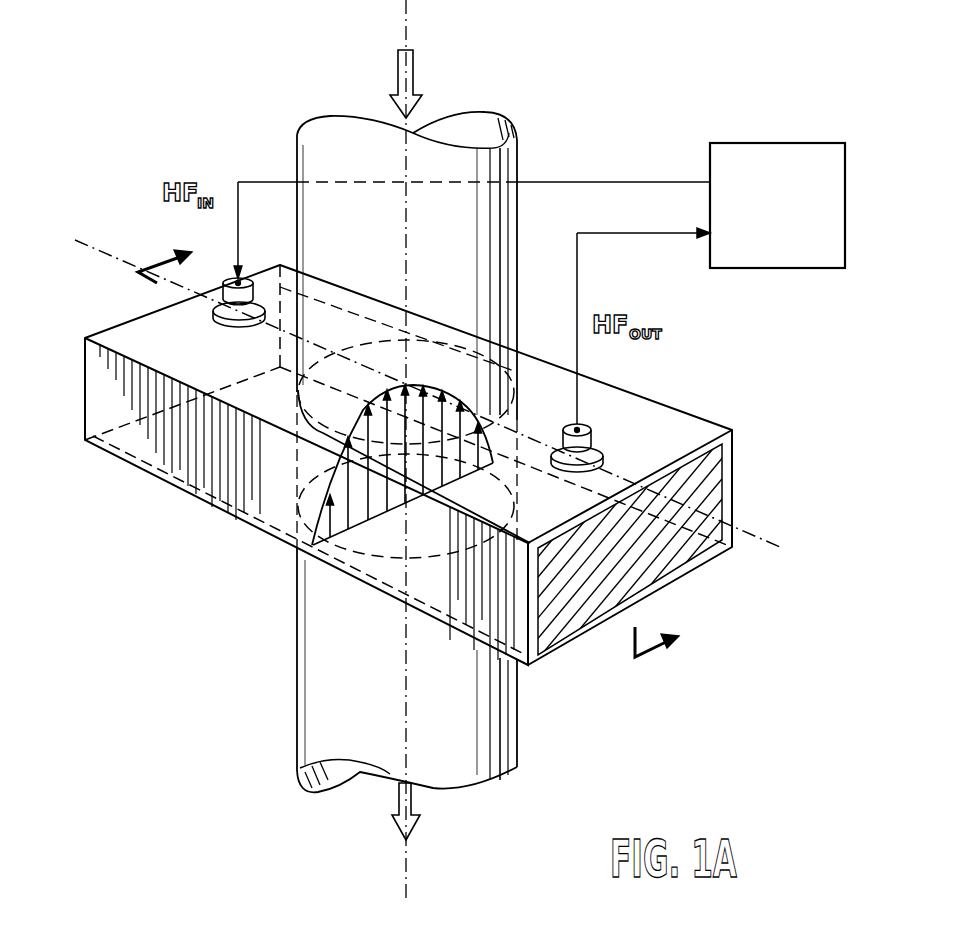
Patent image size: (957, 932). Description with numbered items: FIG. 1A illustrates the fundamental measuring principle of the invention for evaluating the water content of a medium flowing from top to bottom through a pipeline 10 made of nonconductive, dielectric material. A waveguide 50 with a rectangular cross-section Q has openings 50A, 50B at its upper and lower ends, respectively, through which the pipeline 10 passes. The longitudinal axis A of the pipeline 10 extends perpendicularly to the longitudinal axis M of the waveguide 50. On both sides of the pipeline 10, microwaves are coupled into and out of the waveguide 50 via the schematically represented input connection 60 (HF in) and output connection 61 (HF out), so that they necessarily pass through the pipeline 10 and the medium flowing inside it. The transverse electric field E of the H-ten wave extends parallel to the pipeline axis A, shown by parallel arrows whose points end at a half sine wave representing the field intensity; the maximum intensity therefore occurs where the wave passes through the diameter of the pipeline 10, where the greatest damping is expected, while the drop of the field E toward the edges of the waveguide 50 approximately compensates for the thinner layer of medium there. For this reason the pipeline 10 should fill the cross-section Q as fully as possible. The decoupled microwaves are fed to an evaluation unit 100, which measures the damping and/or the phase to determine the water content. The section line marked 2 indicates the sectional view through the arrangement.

The pipeline 10 is at (509, 92).
The waveguide 50 is at (678, 400).
The upper opening of waveguide 50A is at (443, 365).
The lower opening of waveguide 50B is at (330, 548).
The input connection 60 is at (212, 300).
The output connection 61 is at (592, 431).
The evaluation unit 100 is at (783, 268).
The transverse electric field E is at (297, 393).
The rectangular cross-section of waveguide Q is at (700, 485).
The longitudinal axis of waveguide M is at (434, 397).
The longitudinal axis of pipeline A is at (423, 450).
The section line 2- 2 is at (420, 441).